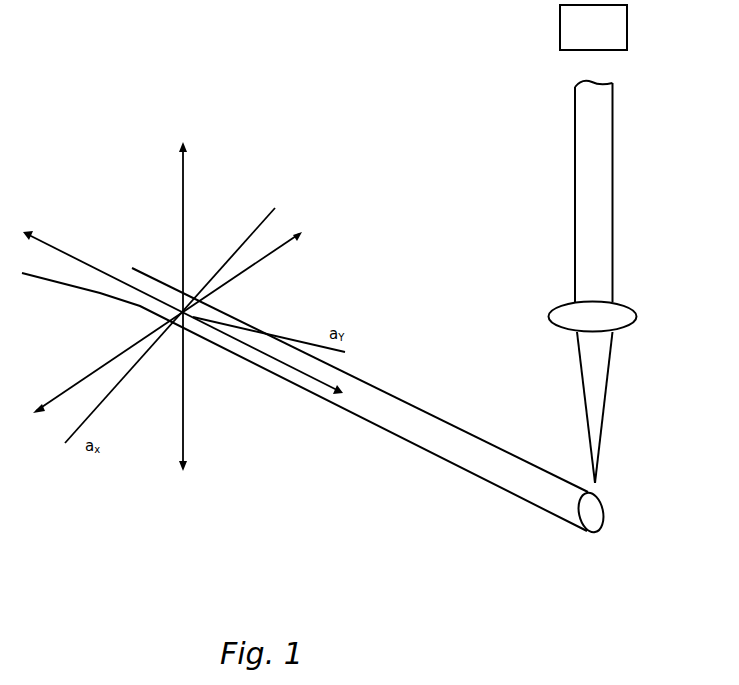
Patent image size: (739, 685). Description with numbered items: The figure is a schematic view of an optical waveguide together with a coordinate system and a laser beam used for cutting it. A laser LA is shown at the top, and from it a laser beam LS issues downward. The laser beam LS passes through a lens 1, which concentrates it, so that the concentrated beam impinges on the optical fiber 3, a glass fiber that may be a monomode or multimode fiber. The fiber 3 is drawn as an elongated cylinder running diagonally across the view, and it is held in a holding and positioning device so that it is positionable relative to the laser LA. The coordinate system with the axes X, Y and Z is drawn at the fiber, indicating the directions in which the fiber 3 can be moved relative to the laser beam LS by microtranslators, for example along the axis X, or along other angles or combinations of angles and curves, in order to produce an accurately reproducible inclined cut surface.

The lens 1 is at (623, 316).
The fiber 3 is at (440, 428).
The laser LA is at (593, 27).
The laser beam LS is at (607, 282).
The axis X is at (176, 318).
The axis Y is at (178, 300).
The axis Z is at (190, 304).